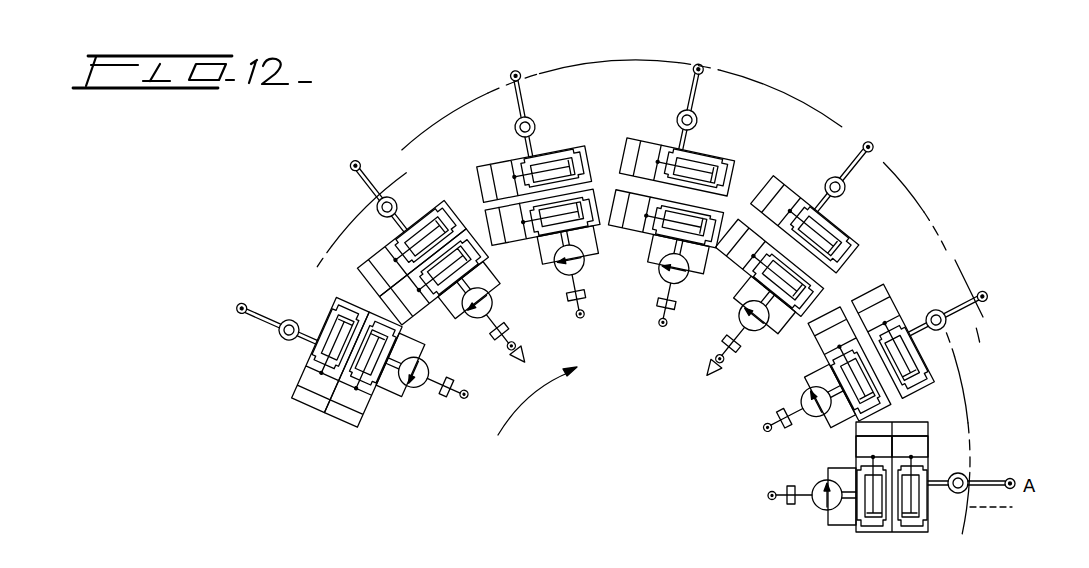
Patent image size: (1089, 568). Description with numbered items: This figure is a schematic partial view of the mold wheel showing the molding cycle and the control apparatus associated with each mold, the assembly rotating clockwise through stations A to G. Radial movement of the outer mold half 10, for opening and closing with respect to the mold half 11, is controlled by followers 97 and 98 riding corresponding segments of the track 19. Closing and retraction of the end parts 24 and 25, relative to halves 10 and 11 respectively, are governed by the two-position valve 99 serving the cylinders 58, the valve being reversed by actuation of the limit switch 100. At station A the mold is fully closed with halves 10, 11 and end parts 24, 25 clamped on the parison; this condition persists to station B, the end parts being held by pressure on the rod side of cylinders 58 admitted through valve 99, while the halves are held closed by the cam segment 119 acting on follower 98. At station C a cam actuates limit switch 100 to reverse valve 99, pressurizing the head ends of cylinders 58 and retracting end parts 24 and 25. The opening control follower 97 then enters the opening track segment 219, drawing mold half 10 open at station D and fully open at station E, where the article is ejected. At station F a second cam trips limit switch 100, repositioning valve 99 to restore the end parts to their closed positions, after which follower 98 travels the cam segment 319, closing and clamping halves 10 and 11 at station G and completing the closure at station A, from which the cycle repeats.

The outer mold half 10 is at (937, 463).
The mold half 11 is at (847, 461).
The track 19 is at (766, 89).
The opening track segment 219 is at (431, 118).
The cam segment 319 is at (938, 298).
The end part 24 is at (920, 447).
The end part 25 is at (863, 450).
The cylinder 58 is at (917, 505).
The opening control follower 97 is at (1012, 477).
The follower 98 is at (958, 493).
The two-position valve 99 is at (820, 497).
The limit switch 100 is at (790, 487).
The cam segment 119 is at (1009, 508).